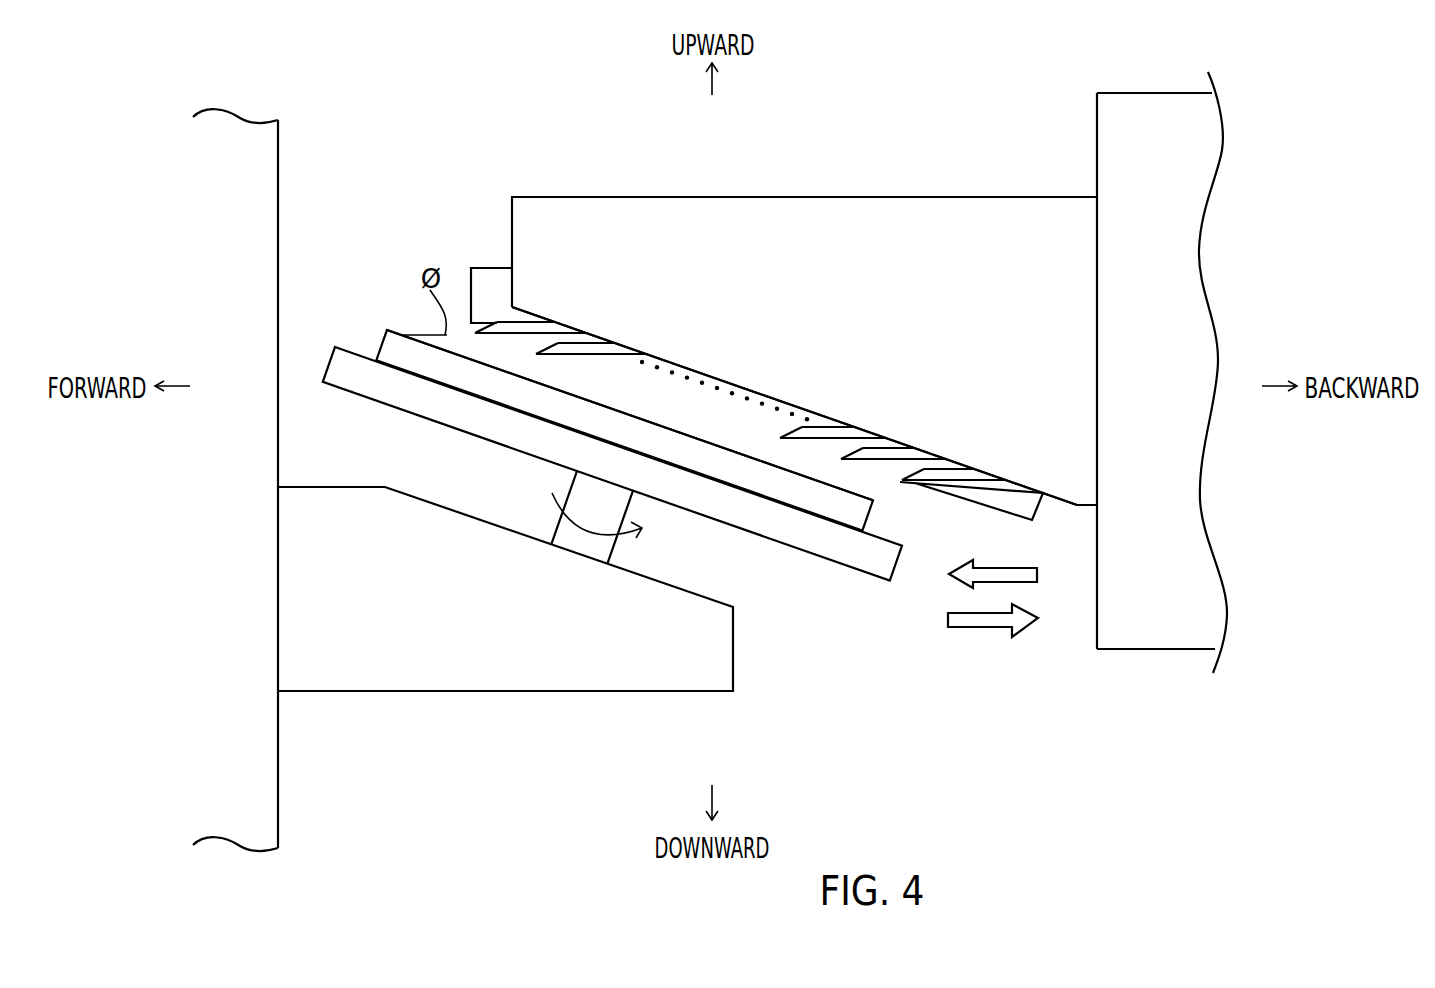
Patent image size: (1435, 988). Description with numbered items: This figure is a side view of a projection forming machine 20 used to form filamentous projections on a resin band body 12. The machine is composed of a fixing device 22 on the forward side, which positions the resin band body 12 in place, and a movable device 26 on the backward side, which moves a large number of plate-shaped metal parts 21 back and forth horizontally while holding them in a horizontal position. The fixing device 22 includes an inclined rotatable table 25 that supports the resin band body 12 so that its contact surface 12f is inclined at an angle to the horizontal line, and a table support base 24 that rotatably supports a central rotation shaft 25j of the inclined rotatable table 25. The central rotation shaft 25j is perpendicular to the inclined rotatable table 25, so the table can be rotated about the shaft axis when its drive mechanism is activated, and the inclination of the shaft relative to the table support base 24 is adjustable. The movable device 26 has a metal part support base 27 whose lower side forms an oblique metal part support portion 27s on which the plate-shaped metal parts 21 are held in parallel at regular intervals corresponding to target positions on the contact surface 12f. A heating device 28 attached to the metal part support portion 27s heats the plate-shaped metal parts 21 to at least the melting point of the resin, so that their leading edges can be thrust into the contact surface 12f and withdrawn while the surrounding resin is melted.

The projection forming machine 20 is at (874, 107).
The plate-shaped metal parts 21 is at (502, 327).
The fixing device 22 is at (312, 320).
The table support base 24 is at (547, 612).
The inclined rotatable table 25 is at (781, 525).
The central rotation shaft 25j is at (615, 503).
The movable device 26 is at (1040, 167).
The metal part support base 27 is at (929, 278).
The metal part support portion 27s is at (763, 375).
The heating device 28 is at (1018, 503).
The resin band body 12 is at (842, 513).
The contact surface 12f is at (486, 357).